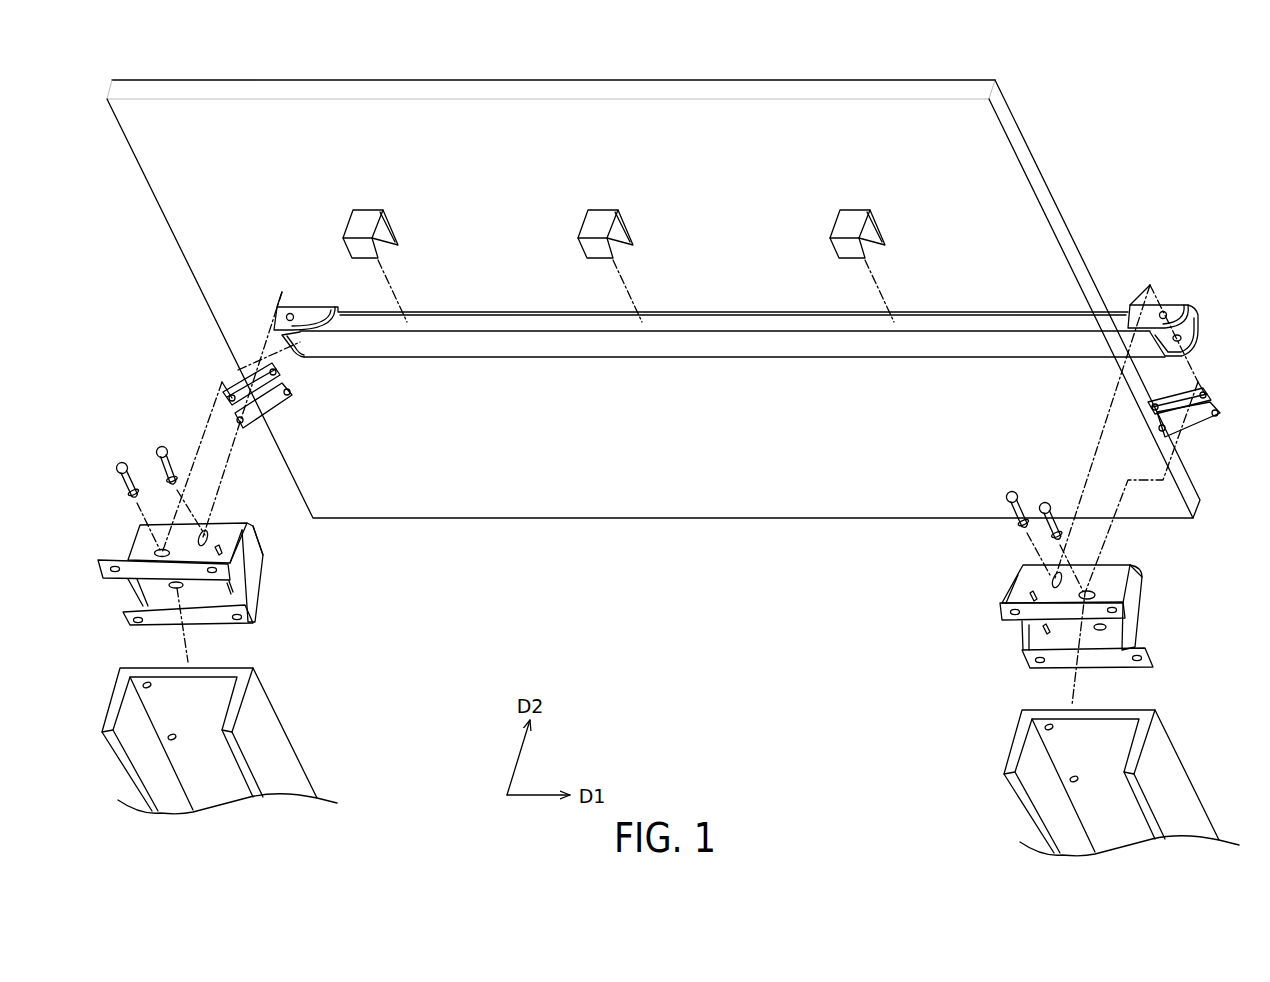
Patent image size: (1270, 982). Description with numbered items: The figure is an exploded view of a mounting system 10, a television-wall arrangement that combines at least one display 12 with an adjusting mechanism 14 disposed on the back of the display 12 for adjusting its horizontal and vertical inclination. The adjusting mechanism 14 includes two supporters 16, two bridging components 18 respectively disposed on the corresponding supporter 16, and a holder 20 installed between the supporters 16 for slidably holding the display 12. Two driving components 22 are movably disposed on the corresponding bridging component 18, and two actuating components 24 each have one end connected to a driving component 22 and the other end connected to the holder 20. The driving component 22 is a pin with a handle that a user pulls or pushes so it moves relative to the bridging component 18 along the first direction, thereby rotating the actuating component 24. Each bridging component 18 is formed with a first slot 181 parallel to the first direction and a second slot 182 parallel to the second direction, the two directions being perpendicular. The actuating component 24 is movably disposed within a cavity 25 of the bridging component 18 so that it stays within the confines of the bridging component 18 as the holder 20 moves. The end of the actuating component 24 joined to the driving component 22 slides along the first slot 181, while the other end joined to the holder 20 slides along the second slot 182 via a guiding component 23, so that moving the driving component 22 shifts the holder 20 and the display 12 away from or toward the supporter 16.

The mounting system 10 is at (1178, 146).
The display 12 is at (1048, 199).
The adjusting mechanism 14 is at (1163, 256).
The supporter 16 is at (280, 742).
The bridging component 18 is at (257, 597).
The holder 20 is at (662, 352).
The driving component 22 is at (121, 462).
The guiding component 23 is at (161, 447).
The actuating component 24 is at (253, 413).
The cavity 25 is at (256, 542).
The first slot 181 is at (185, 586).
The second slot 182 is at (233, 587).